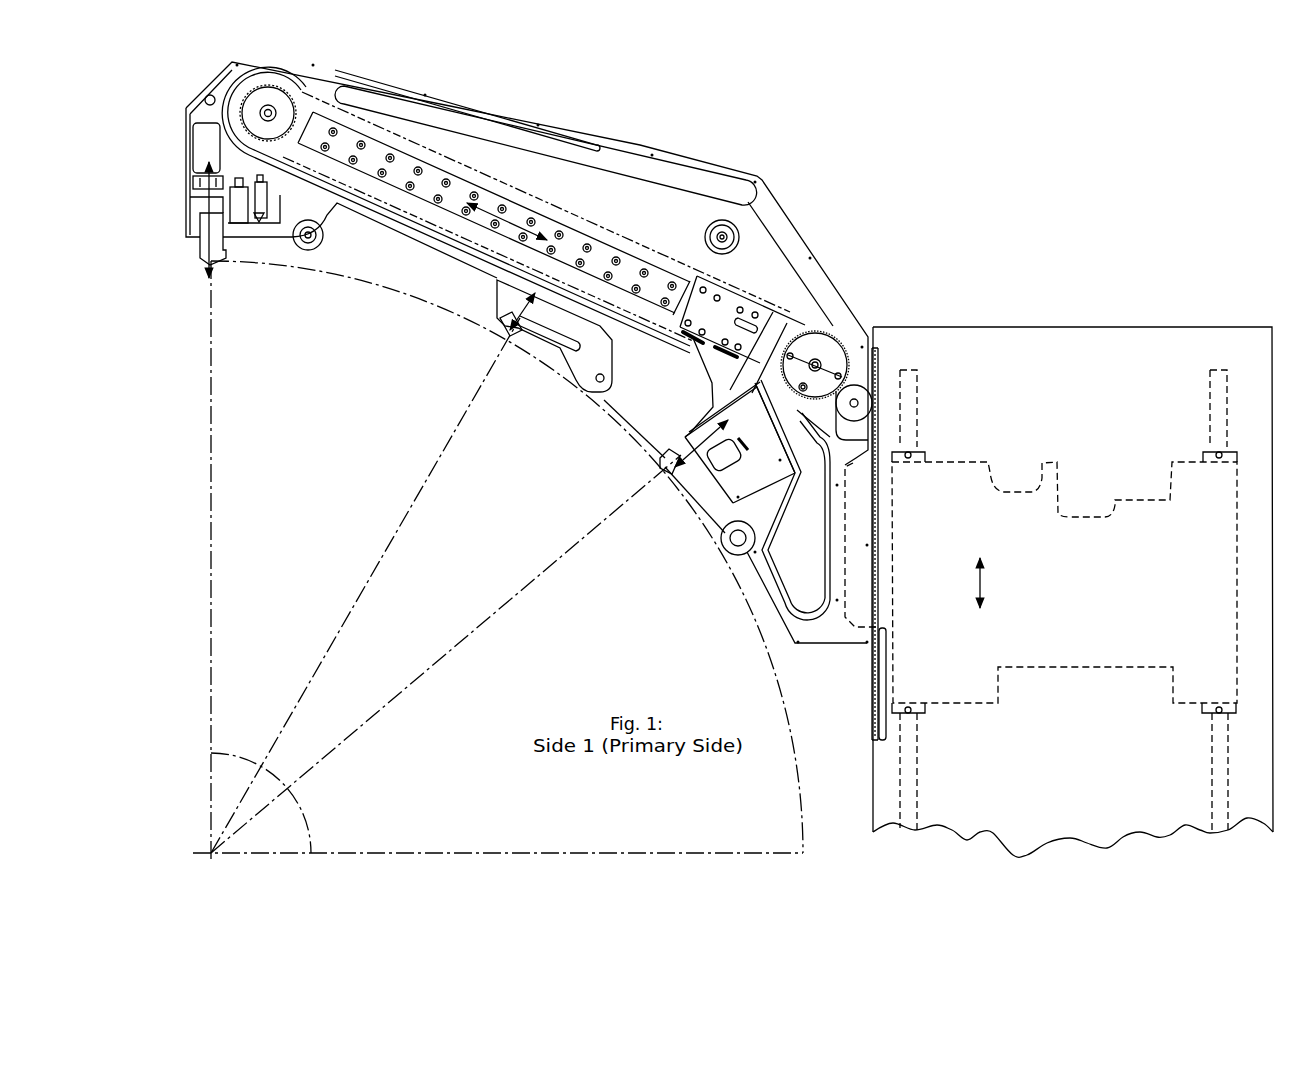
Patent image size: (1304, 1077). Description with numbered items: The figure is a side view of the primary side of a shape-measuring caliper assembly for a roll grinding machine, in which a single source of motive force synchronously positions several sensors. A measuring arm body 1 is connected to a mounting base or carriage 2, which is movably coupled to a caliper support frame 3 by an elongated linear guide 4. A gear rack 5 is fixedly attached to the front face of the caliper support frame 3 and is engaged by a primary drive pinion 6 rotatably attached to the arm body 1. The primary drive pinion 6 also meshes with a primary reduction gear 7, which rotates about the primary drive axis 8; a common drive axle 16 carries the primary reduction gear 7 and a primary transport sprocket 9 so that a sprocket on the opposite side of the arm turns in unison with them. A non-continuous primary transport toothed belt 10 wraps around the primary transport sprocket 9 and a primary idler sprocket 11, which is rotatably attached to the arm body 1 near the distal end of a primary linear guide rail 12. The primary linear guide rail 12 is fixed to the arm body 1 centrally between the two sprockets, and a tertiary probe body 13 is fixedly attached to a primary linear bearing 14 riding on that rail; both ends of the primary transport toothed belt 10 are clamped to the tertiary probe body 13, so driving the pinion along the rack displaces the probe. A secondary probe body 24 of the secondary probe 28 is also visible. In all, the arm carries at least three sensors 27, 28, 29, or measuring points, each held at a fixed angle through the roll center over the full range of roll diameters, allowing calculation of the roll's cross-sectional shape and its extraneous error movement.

The measuring arm body 1 is at (820, 258).
The mounting base or carriage 2 is at (853, 628).
The caliper support frame 3 is at (1032, 325).
The elongated linear guide 4 is at (921, 369).
The gear rack 5 is at (881, 347).
The primary drive pinion 6 is at (857, 424).
The primary reduction gear 7 is at (802, 413).
The primary drive axis 8 is at (801, 261).
The common drive axle 16 is at (815, 359).
The primary transport sprocket 9 is at (826, 334).
The primary transport toothed belt 10 is at (557, 207).
The primary idler sprocket 11 is at (302, 92).
The primary linear guide rail 12 is at (492, 218).
The tertiary probe body 13 is at (672, 443).
The primary linear bearing 14 is at (693, 283).
The secondary probe body 24 is at (500, 303).
The sensor 27 is at (247, 270).
The secondary probe 28 is at (527, 375).
The sensor 29 is at (683, 512).